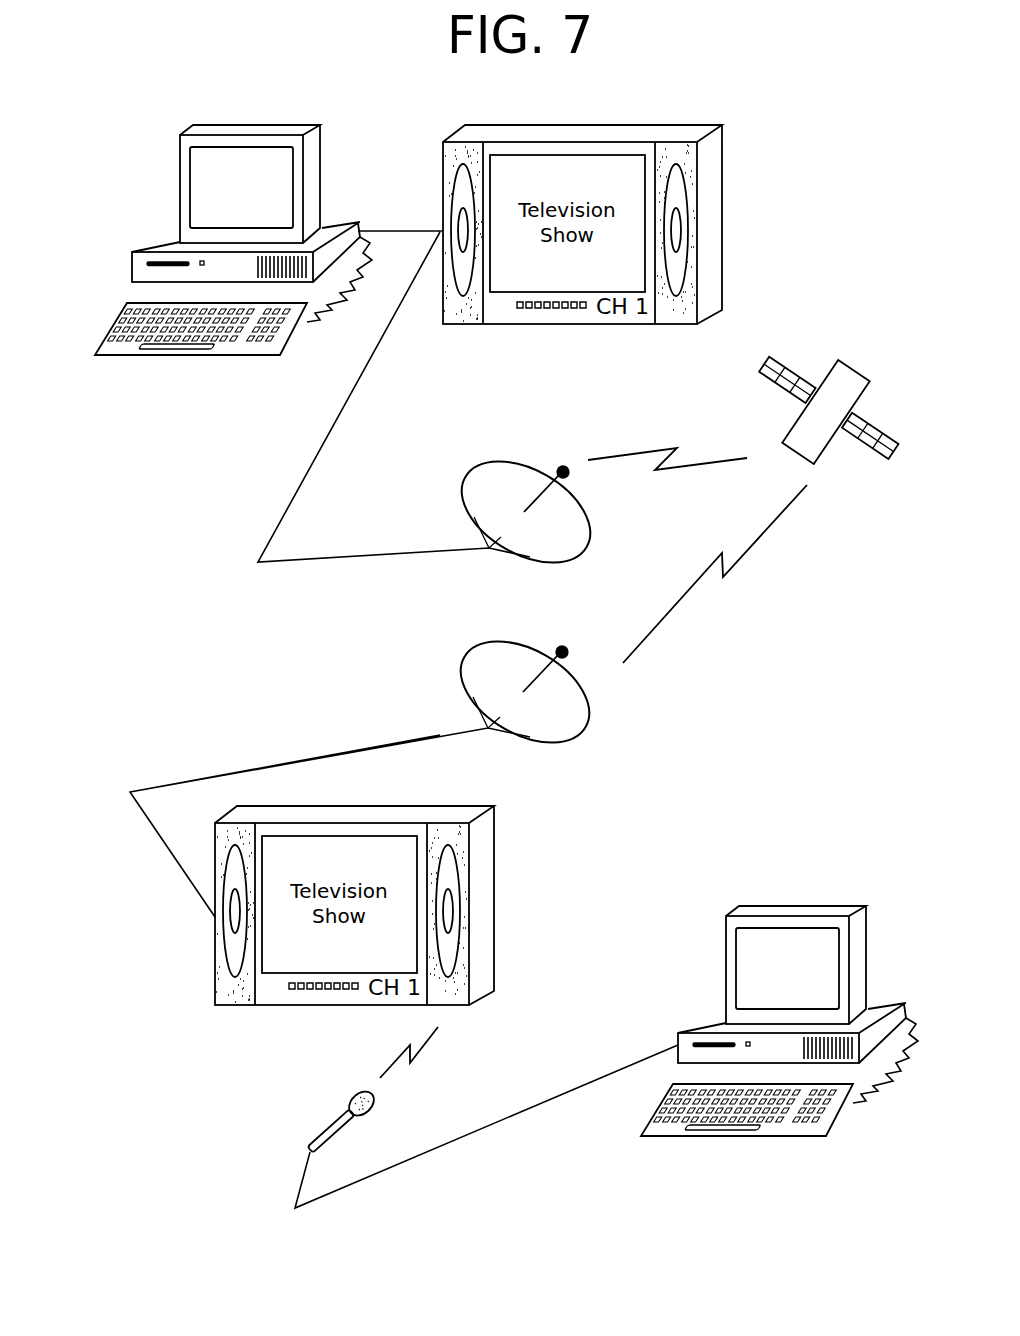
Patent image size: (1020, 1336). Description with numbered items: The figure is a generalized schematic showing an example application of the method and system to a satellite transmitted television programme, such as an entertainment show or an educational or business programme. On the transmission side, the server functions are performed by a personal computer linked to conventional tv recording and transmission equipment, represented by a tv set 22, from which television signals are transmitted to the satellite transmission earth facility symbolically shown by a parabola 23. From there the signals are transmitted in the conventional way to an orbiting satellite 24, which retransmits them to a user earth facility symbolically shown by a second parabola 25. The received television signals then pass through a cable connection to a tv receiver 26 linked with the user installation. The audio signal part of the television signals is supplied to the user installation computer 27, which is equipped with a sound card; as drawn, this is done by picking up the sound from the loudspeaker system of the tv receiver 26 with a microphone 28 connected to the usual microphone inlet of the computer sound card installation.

The tv set 22 is at (168, 182).
The parabola 23 is at (515, 460).
The orbiting satellite 24 is at (785, 417).
The parabola 25 is at (592, 693).
The tv receiver 26 is at (503, 910).
The user installation computer 27 is at (792, 895).
The microphone 28 is at (305, 1133).